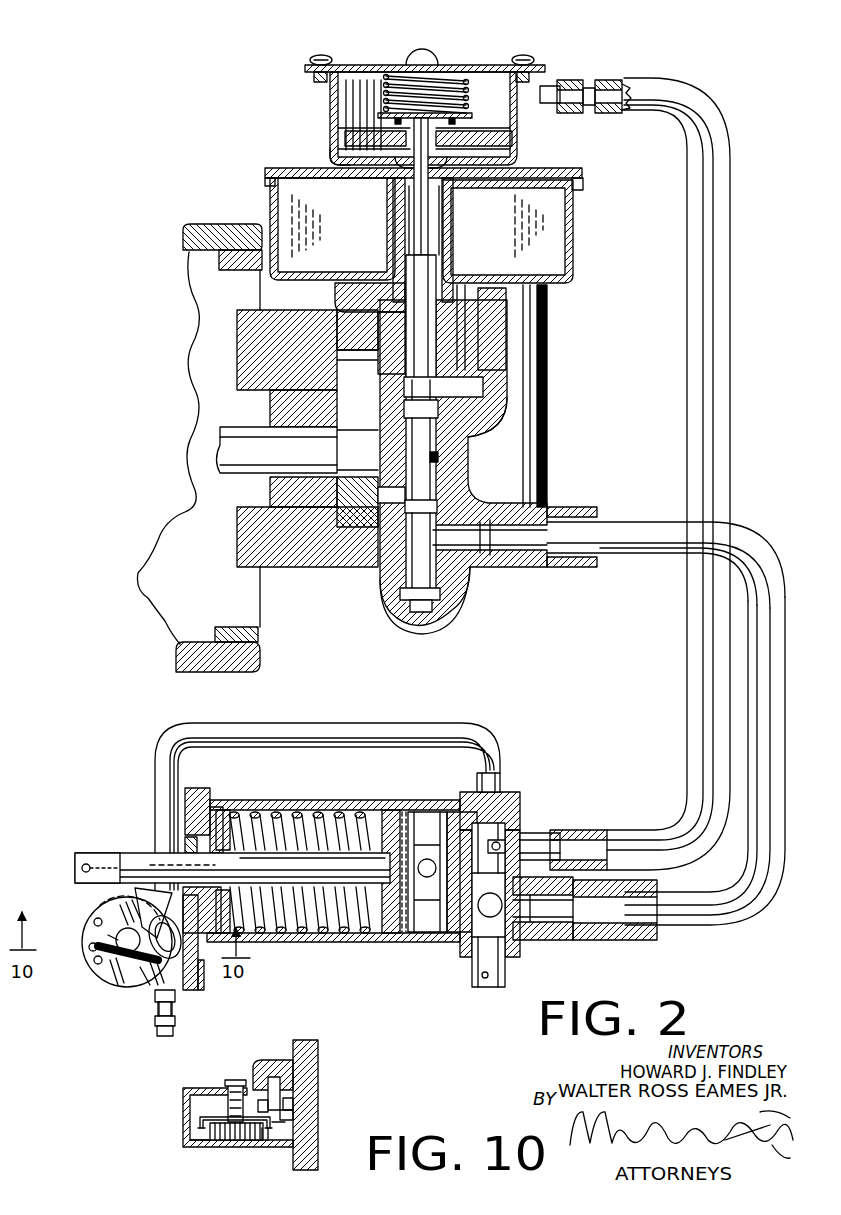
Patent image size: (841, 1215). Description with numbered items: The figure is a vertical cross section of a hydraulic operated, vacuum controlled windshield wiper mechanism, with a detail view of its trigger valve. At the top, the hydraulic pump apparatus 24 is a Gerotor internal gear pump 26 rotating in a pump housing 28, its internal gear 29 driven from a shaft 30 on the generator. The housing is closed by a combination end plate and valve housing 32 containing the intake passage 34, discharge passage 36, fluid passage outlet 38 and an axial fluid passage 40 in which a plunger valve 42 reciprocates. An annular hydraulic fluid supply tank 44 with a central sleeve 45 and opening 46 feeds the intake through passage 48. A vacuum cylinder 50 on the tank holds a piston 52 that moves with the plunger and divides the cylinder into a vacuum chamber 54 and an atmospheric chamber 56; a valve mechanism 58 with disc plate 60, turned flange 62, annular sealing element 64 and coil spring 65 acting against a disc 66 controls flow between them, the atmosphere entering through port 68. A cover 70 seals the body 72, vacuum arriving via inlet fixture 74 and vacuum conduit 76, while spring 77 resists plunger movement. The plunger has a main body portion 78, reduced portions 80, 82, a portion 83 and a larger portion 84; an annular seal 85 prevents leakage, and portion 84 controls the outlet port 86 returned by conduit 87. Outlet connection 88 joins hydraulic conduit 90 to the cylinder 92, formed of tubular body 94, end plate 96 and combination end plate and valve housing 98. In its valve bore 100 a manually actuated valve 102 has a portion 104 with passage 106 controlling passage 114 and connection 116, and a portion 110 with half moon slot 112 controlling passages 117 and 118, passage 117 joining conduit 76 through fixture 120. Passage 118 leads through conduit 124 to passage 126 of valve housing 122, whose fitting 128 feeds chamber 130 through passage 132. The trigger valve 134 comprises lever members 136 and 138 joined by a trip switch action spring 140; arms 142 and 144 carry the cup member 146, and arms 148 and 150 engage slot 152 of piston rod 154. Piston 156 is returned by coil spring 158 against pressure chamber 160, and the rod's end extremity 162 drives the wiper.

In FIG. 2, the hydraulic pump apparatus 24 is at (313, 569).
In FIG. 2, the internal gear pump 26 is at (367, 434).
In FIG. 2, the pump housing 28 is at (360, 530).
In FIG. 2, the internal gear 29 is at (360, 458).
In FIG. 2, the shaft 30 is at (227, 433).
In FIG. 2, the combination end plate and valve housing 32 is at (512, 403).
In FIG. 2, the intake port and passage 34 is at (406, 394).
In FIG. 2, the discharge port and passage 36 is at (384, 503).
In FIG. 2, the fluid passage outlet 38 is at (460, 522).
In FIG. 2, the fluid passage 40 is at (437, 440).
In FIG. 2, the plunger valve 42 is at (440, 457).
In FIG. 2, the hydraulic fluid supply tank 44 is at (580, 252).
In FIG. 2, the central sleeve 45 is at (453, 232).
In FIG. 2, the opening 46 is at (438, 247).
In FIG. 2, the passage 48 is at (473, 335).
In FIG. 2, the vacuum cylinder 50 is at (328, 115).
In FIG. 2, the piston 52 is at (487, 128).
In FIG. 2, the vacuum chamber 54 is at (522, 104).
In FIG. 2, the atmospheric chamber 56 is at (517, 157).
In FIG. 2, the valve mechanism 58 is at (345, 180).
In FIG. 2, the disc plate 60 is at (381, 182).
In FIG. 2, the turned flange 62 is at (455, 160).
In FIG. 2, the annular sealing element 64 is at (518, 138).
In FIG. 2, the coil spring 65 is at (343, 132).
In FIG. 2, the disc 66 is at (470, 112).
In FIG. 2, the port 68 is at (332, 155).
In FIG. 2, the cover 70 is at (350, 64).
In FIG. 2, the body 72 is at (330, 92).
In FIG. 2, the inlet fixture 74 is at (585, 92).
In FIG. 2, the vacuum line or conduit 76 is at (716, 273).
In FIG. 2, the spring 77 is at (388, 76).
In FIG. 2, the main body portion 78 is at (422, 278).
In FIG. 2, the reduced portion 80 is at (423, 412).
In FIG. 2, the reduced portion 82 is at (420, 591).
In FIG. 2, the portion 83 is at (437, 500).
In FIG. 2, the portion 84 is at (458, 614).
In FIG. 2, the annular seal 85 is at (377, 317).
In FIG. 2, the fluid outlet passage or port 86 is at (423, 613).
In FIG. 2, the fluid conduit 87 is at (533, 463).
In FIG. 2, the outlet connection 88 is at (547, 578).
In FIG. 2, the hydraulic fluid line or conduit 90 is at (764, 687).
In FIG. 2, the cylinder 92 is at (308, 945).
In FIG. 2, the tubular body portion 94 is at (328, 942).
In FIG. 2, the end plate 96 is at (185, 805).
In FIG. 2, the combination end plate and valve housing 98 is at (513, 790).
In FIG. 2, the valve bore 100 is at (457, 942).
In FIG. 2, the manually actuated valve 102 is at (470, 972).
In FIG. 2, the valve portion 104 is at (505, 957).
In FIG. 2, the passage 106 is at (432, 942).
In FIG. 2, the valve portion 110 is at (506, 800).
In FIG. 2, the half moon slot 112 is at (542, 838).
In FIG. 2, the passage 114 is at (524, 922).
In FIG. 2, the connection 116 is at (583, 932).
In FIG. 2, the passage 117 is at (510, 847).
In FIG. 2, the passage 118 is at (483, 835).
In FIG. 2, the fixture 120 is at (578, 838).
In FIG. 2, the valve housing 122 is at (118, 985).
In FIG. 2, the conduit 124 is at (386, 723).
In FIG. 2, the passage 126 is at (130, 897).
In FIG. 2, the fitting 128 is at (176, 1011).
In FIG. 10, the chamber 130 is at (292, 1118).
In FIG. 2, the passage 132 is at (157, 970).
In FIG. 10, the passage 132 is at (275, 1076).
In FIG. 2, the trigger valve 134 is at (114, 936).
In FIG. 10, the trigger valve 134 is at (205, 1145).
In FIG. 2, the lever member 136 is at (110, 940).
In FIG. 10, the lever member 136 is at (205, 1112).
In FIG. 2, the lever member 138 is at (146, 913).
In FIG. 10, the lever member 138 is at (280, 1125).
In FIG. 2, the trip switch action spring 140 is at (117, 961).
In FIG. 10, the trip switch action spring 140 is at (236, 1142).
In FIG. 2, the arm 142 is at (192, 962).
In FIG. 10, the arm 142 is at (240, 1088).
In FIG. 2, the arm 144 is at (92, 951).
In FIG. 10, the arm 144 is at (200, 1124).
In FIG. 10, the cup or cover member 146 is at (290, 1104).
In FIG. 2, the arm 148 is at (140, 968).
In FIG. 10, the arm 148 is at (266, 1141).
In FIG. 2, the arm 150 is at (145, 884).
In FIG. 2, the slot 152 is at (232, 866).
In FIG. 2, the piston rod 154 is at (312, 860).
In FIG. 2, the piston 156 is at (392, 918).
In FIG. 2, the coil spring 158 is at (314, 812).
In FIG. 2, the pressure chamber 160 is at (433, 850).
In FIG. 2, the end extremity 162 is at (97, 862).